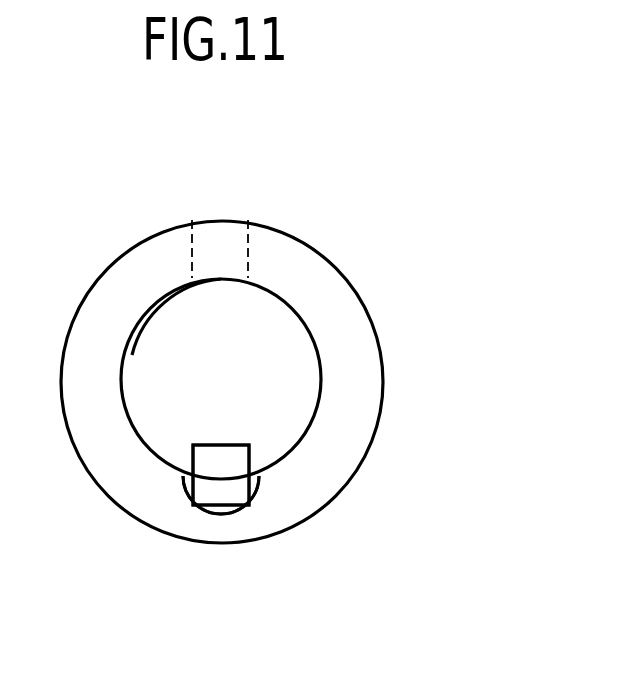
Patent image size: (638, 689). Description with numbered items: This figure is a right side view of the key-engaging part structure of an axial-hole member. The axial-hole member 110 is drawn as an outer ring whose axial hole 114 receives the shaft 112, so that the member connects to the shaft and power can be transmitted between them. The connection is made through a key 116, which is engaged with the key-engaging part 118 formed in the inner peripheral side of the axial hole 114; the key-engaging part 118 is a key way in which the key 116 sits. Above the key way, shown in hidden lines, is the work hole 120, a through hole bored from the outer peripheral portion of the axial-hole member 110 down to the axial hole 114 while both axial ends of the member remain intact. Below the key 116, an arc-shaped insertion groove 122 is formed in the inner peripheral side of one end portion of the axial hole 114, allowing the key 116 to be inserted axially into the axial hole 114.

The axial-hole member 110 is at (357, 313).
The shaft 112 is at (318, 392).
The axial hole 114 is at (142, 323).
The key 116 is at (233, 444).
The key-engaging part 118 is at (202, 426).
The work hole 120 is at (193, 251).
The insertion groove 122 is at (218, 512).